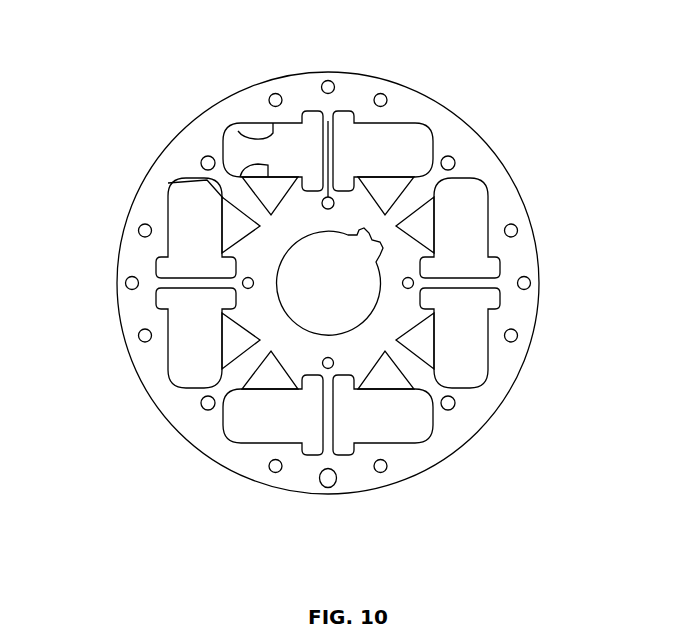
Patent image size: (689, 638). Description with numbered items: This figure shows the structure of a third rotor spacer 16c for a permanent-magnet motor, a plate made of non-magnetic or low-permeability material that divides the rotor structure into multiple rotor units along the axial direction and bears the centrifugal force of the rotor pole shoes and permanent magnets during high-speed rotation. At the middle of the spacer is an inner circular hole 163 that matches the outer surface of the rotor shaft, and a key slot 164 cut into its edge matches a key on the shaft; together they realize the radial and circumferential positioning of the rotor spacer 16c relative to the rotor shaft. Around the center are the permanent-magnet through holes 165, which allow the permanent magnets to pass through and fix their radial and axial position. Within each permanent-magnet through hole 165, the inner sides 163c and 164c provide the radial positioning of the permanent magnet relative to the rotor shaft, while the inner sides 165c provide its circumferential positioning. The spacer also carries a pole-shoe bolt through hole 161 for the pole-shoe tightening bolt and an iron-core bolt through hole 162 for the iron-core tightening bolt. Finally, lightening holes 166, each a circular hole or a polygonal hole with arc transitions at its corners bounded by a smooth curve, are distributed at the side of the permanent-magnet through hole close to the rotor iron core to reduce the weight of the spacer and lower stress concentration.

The third rotor spacer 16c is at (456, 136).
The pole-shoe bolt through hole 161 is at (516, 342).
The iron-core bolt through hole 162 is at (326, 120).
The center circular hole 163 is at (381, 307).
The key slot 164 is at (392, 228).
The permanent-magnet through hole 165 is at (376, 152).
The lightening hole 166 is at (451, 409).
The inner side of permanent-magnet through hole 163c is at (205, 180).
The inner side of permanent-magnet through hole 164c is at (262, 141).
The inner side of permanent-magnet through hole 165c is at (222, 150).